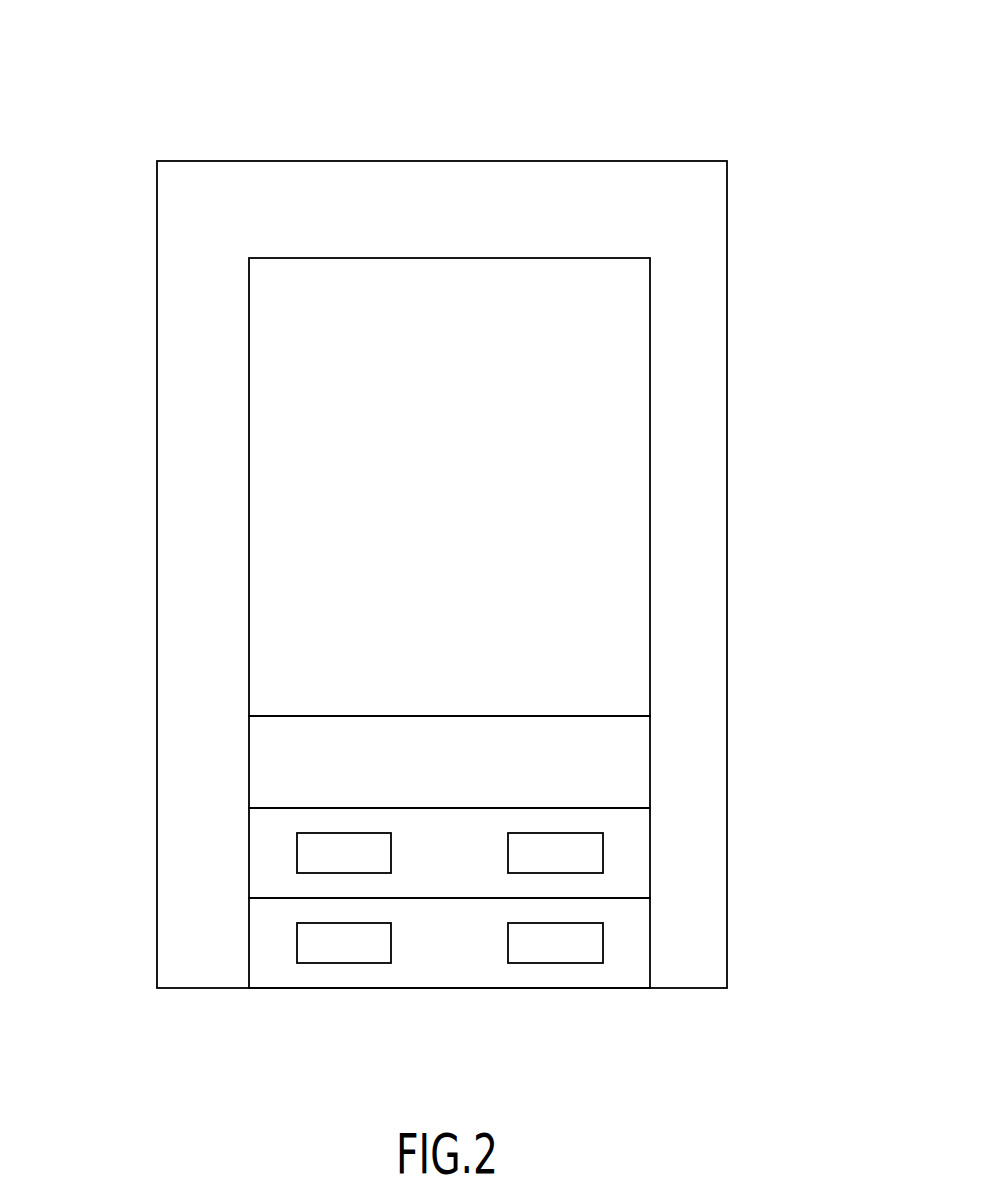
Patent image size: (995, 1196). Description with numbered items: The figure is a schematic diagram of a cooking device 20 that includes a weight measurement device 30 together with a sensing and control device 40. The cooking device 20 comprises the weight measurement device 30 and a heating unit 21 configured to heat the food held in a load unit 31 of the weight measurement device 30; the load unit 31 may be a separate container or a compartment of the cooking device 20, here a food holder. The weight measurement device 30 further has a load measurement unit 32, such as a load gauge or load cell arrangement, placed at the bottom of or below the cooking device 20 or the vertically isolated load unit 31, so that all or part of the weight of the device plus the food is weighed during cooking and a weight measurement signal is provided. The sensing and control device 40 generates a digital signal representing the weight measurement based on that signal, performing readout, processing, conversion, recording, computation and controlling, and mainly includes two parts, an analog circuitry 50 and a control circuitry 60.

The cooking device 20 is at (712, 76).
The weight measurement device 30 is at (650, 968).
The load unit 31 is at (650, 526).
The heating unit 21 is at (650, 773).
The sensing and control device 40 is at (650, 881).
The analog circuitry 50 is at (297, 853).
The control circuitry 60 is at (603, 853).
The load measurement unit 32 is at (342, 963).